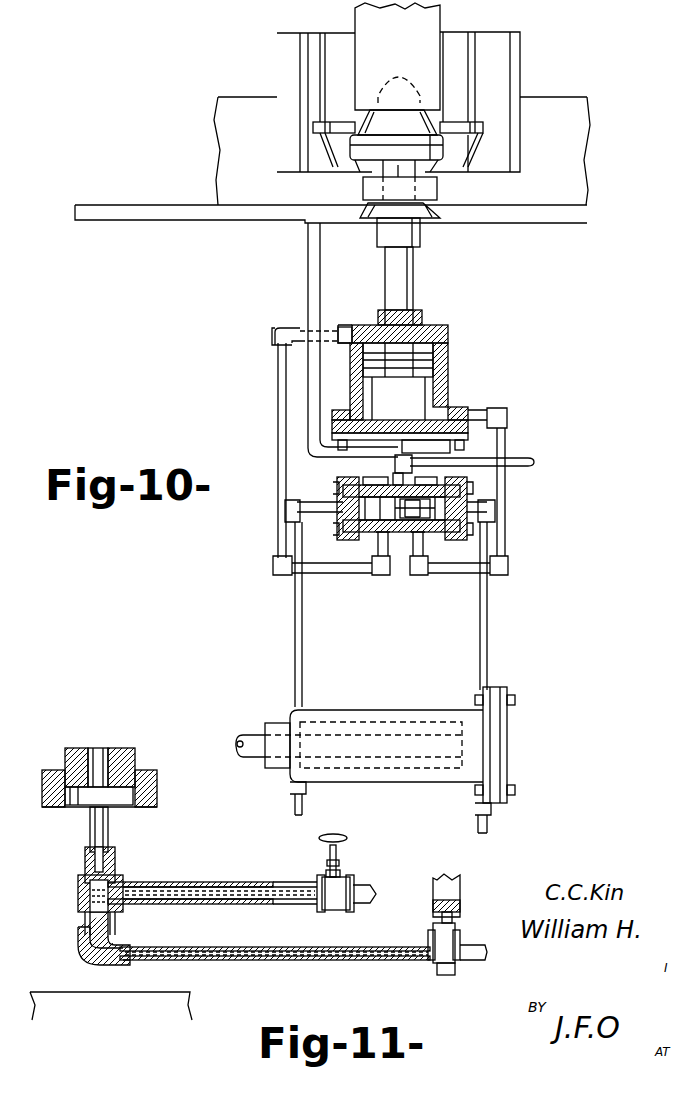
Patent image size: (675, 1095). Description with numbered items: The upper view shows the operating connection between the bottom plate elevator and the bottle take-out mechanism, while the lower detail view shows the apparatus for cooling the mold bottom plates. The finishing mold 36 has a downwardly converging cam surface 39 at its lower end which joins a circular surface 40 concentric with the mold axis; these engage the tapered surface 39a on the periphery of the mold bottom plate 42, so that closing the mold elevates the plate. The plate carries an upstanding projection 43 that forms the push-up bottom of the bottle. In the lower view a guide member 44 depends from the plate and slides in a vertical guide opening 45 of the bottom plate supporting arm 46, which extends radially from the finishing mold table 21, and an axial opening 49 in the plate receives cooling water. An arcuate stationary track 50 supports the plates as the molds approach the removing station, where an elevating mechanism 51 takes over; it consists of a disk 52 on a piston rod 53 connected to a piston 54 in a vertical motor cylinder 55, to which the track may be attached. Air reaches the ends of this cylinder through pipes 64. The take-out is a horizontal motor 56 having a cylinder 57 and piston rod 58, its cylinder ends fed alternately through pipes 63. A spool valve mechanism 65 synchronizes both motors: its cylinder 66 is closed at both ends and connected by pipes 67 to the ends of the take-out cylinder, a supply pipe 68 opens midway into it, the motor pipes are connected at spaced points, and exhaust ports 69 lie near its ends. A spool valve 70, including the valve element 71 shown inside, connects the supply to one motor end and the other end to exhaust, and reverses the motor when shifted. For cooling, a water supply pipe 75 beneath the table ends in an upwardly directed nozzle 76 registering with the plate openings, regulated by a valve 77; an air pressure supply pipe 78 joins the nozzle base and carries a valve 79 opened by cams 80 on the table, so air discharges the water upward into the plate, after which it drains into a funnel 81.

In FIG. 10, the finishing mold table 21 is at (586, 207).
In FIG. 10, the housing 36 is at (515, 62).
In FIG. 10, the downwardly converging cam surface 39 is at (476, 152).
In FIG. 10, the tapered surface 39a is at (440, 163).
In FIG. 10, the circular surface 40 is at (460, 126).
In FIG. 10, the mold bottom plate 42 is at (440, 147).
In FIG. 10, the upstanding projection 43 is at (397, 69).
In FIG. 10, the bottom plate supporting arm 46 is at (437, 190).
In FIG. 11, the bottom plate supporting arm 46 is at (152, 790).
In FIG. 10, the arcuate stationary track 50 is at (185, 222).
In FIG. 10, the elevating mechanism 51 is at (414, 350).
In FIG. 10, the disk 52 is at (438, 212).
In FIG. 10, the piston rod 53 is at (405, 268).
In FIG. 10, the piston 54 is at (428, 362).
In FIG. 10, the vertical motor cylinder 55 is at (448, 380).
In FIG. 10, the pipes 64 is at (278, 368).
In FIG. 10, the spool valve mechanism 65 is at (393, 519).
In FIG. 10, the cylinder 66 is at (376, 530).
In FIG. 10, the pipes 67 is at (295, 602).
In FIG. 10, the supply pipe 68 is at (515, 462).
In FIG. 10, the exhaust ports 69 is at (378, 478).
In FIG. 10, the spool valve 70 is at (425, 530).
In FIG. 10, the valve spool 71 is at (440, 493).
In FIG. 10, the horizontal motor 56 is at (405, 788).
In FIG. 10, the cylinder 57 is at (410, 712).
In FIG. 10, the piston rod 58 is at (255, 758).
In FIG. 10, the pipes 63 is at (302, 800).
In FIG. 11, the guide member 44 is at (130, 752).
In FIG. 11, the vertical guide opening 45 is at (128, 805).
In FIG. 11, the axial opening 49 is at (102, 752).
In FIG. 11, the water supply pipe 75 is at (240, 866).
In FIG. 11, the nozzle 76 is at (90, 828).
In FIG. 11, the valve 77 is at (340, 858).
In FIG. 11, the air pressure supply pipe 78 is at (310, 933).
In FIG. 11, the valve 79 is at (462, 935).
In FIG. 11, the cams 80 is at (460, 895).
In FIG. 11, the funnel 81 is at (80, 990).